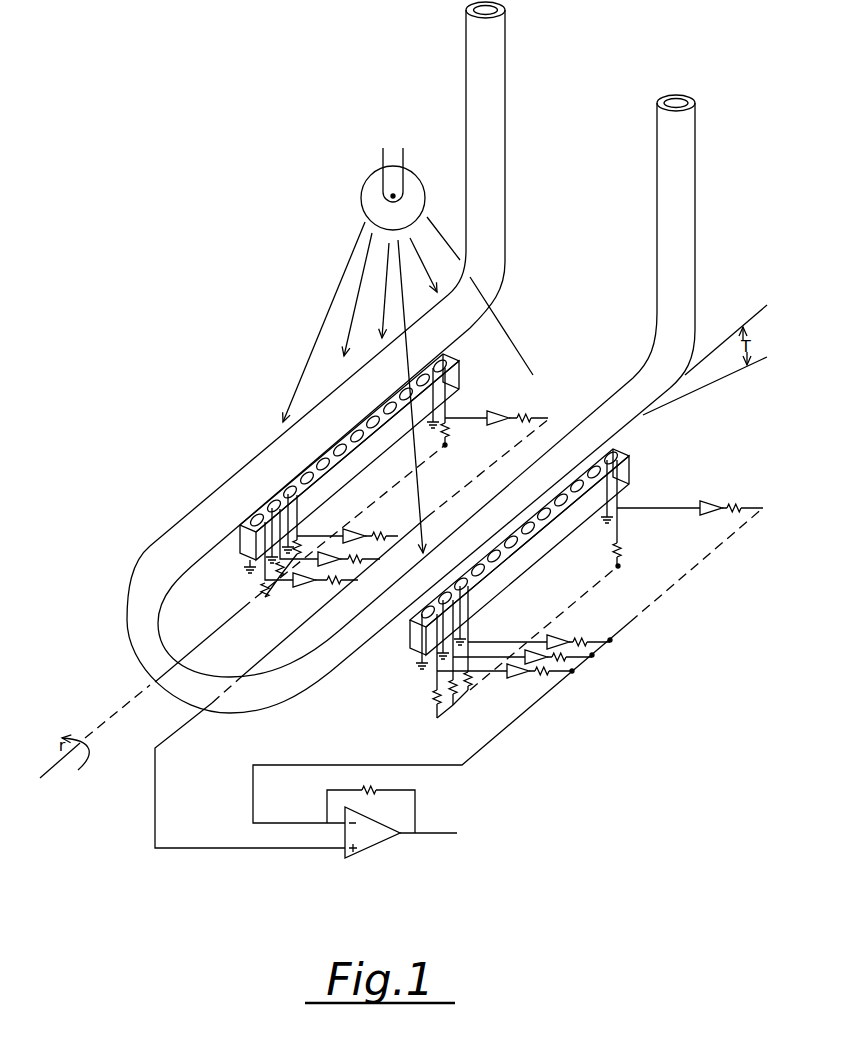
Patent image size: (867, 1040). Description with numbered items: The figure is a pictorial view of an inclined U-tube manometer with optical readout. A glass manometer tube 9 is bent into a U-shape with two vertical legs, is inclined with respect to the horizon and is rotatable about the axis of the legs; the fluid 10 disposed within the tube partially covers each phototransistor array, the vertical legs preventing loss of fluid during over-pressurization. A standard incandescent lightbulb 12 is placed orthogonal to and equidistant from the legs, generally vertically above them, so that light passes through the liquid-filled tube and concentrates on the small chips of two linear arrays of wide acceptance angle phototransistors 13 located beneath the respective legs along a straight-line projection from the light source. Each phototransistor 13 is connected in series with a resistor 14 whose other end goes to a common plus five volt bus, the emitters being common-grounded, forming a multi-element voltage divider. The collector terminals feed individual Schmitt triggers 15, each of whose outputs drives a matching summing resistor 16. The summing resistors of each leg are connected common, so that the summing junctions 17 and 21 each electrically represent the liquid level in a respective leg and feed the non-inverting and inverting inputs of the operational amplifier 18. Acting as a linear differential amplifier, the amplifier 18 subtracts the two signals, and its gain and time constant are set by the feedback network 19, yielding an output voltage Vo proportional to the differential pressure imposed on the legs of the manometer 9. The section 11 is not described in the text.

The manometer tube 9 is at (487, 122).
The fluid 10 is at (130, 625).
The straight tube section 11 is at (243, 472).
The lightbulb 12 is at (362, 192).
The phototransistors 13 is at (458, 383).
The resistor 14 is at (263, 590).
The Schmitt triggers 15 is at (493, 410).
The summing resistors 16 is at (570, 423).
The summing junction 17 is at (247, 850).
The operational amplifier 18 is at (378, 847).
The feedback network 19 is at (385, 787).
The summing junction 21 is at (292, 822).